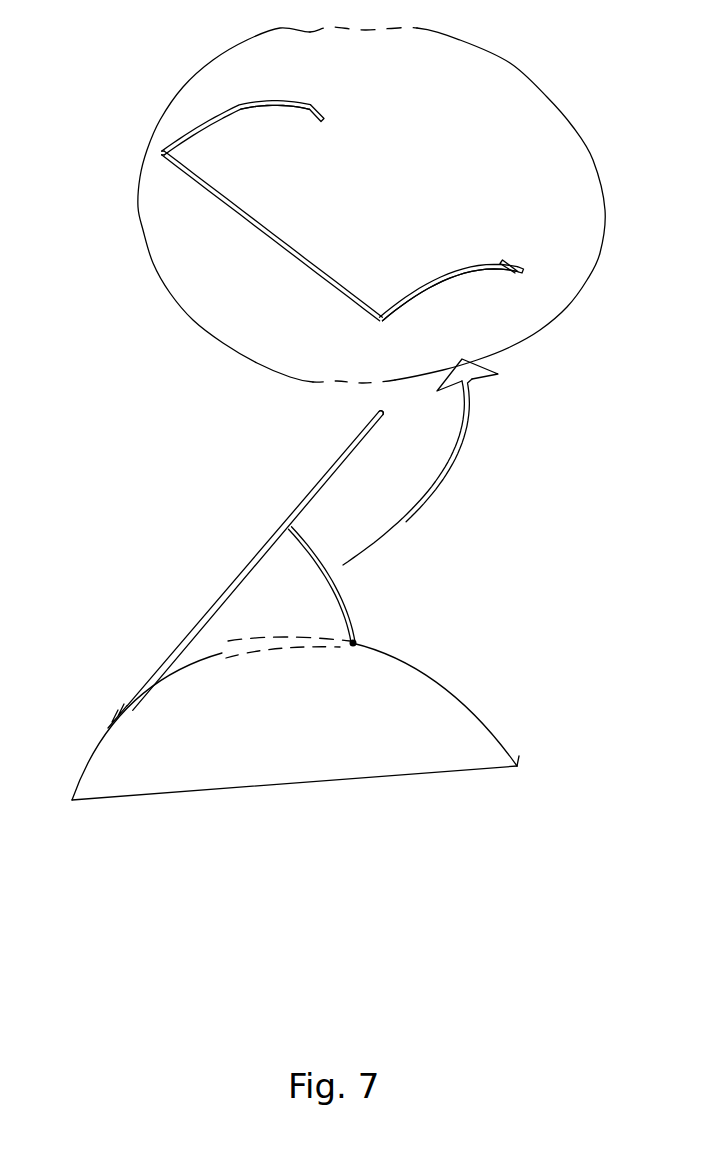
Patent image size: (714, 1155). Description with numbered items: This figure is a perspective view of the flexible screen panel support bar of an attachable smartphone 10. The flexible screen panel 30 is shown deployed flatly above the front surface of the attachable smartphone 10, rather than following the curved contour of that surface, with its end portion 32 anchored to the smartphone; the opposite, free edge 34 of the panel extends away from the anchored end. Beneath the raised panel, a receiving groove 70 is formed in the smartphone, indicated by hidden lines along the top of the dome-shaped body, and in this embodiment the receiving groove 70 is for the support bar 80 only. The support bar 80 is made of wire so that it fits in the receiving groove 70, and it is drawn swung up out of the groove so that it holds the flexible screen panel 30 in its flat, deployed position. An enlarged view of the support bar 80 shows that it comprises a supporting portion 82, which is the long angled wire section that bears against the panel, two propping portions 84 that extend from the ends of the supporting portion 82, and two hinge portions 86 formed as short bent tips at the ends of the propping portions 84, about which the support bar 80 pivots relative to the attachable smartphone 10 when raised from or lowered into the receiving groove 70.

The attachable smartphone 10 is at (519, 742).
The flexible screen panel 30 is at (320, 488).
The end portion 32 is at (127, 707).
The free edge of panel 34 is at (380, 413).
The receiving groove 70 is at (279, 645).
The support bar 80 is at (357, 607).
The supporting portion 82 is at (277, 242).
The propping portions 84 is at (240, 102).
The hinge portions 86 is at (322, 112).